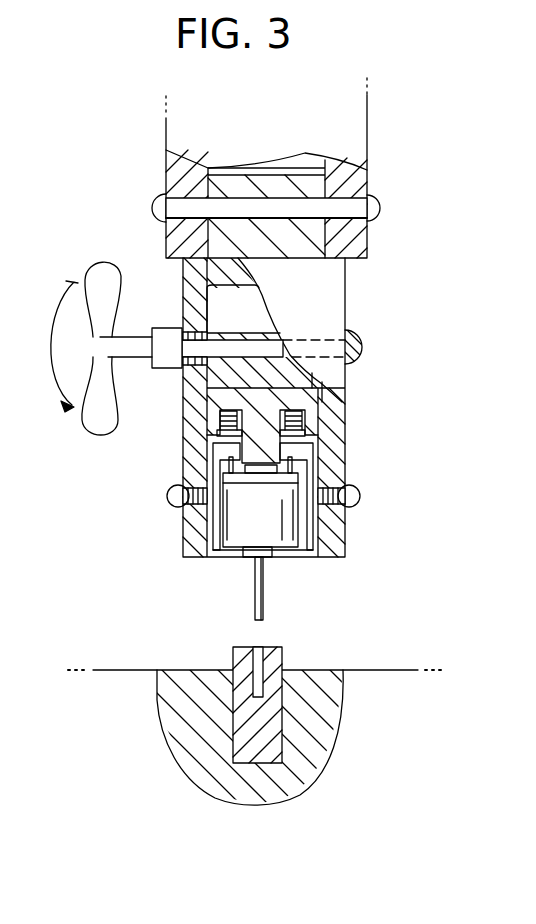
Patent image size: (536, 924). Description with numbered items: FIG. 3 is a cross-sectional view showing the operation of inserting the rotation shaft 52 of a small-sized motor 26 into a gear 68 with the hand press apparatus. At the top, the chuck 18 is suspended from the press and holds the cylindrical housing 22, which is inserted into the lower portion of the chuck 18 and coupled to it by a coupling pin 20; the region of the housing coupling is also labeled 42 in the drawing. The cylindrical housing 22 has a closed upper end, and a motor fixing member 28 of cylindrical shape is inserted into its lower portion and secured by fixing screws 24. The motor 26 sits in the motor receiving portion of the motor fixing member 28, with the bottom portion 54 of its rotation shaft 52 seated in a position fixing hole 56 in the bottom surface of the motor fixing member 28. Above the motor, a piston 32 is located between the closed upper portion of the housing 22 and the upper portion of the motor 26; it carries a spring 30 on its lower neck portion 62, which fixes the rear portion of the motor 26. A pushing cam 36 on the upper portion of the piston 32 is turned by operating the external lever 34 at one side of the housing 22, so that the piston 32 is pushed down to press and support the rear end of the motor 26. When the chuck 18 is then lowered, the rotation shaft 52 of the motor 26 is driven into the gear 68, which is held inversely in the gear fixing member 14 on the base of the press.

The gear fixing member 14 is at (113, 690).
The chuck 18 is at (180, 131).
The coupling pin 20 is at (183, 208).
The cylindrical housing 22 is at (362, 293).
The fixing screws 24 is at (180, 490).
The small-sized motor 26 is at (290, 540).
The motor fixing member 28 is at (313, 528).
The spring 30 is at (305, 420).
The piston 32 is at (345, 400).
The external lever 34 is at (93, 425).
The pushing cam 36 is at (183, 383).
The upper block 42 is at (324, 184).
The rotation shaft 52 is at (255, 600).
The bottom portion 54 is at (265, 562).
The position fixing hole 56 is at (247, 562).
The lower neck portion 62 is at (315, 466).
The gear 68 is at (283, 663).